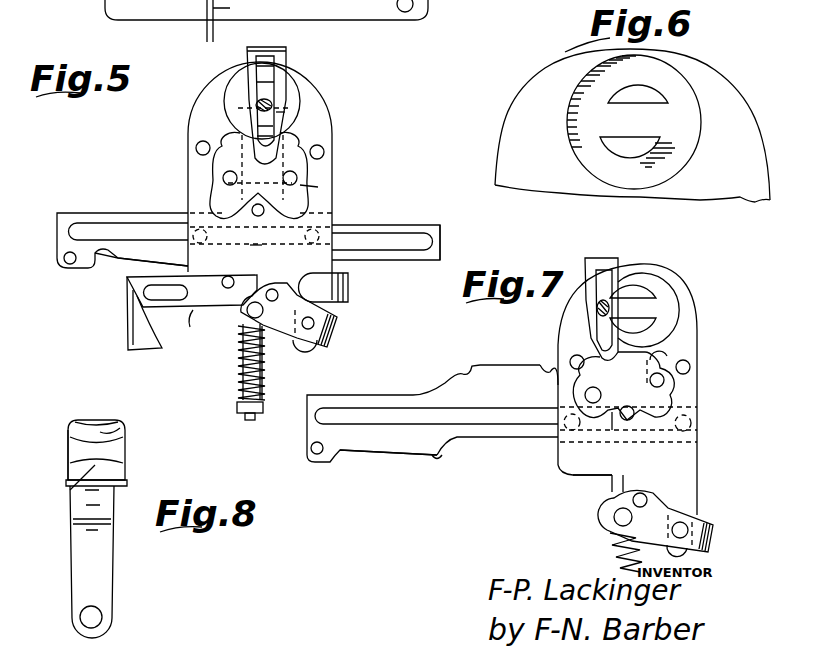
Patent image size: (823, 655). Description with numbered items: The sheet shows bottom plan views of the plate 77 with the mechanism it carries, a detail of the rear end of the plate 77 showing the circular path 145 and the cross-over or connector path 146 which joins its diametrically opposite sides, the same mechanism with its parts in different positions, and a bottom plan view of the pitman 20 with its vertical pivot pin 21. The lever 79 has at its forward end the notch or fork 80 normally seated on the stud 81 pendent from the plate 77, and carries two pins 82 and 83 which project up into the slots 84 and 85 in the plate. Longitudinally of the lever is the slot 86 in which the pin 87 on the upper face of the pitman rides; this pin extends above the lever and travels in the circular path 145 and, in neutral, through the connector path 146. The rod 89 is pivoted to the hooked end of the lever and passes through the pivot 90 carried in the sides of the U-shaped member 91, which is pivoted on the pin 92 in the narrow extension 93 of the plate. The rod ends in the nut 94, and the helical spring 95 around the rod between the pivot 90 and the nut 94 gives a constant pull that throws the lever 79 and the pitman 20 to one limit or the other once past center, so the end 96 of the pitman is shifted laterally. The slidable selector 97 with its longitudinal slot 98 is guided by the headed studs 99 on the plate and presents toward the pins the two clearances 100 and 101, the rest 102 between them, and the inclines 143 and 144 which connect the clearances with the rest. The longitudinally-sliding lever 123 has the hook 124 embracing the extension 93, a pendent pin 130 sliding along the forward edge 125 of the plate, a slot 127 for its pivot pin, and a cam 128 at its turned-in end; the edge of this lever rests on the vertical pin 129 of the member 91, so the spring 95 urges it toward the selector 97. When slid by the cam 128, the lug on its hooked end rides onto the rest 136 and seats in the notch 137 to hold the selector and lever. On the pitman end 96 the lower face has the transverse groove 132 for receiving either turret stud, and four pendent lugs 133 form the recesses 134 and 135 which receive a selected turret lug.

In FIG. 8, the pitman 20 is at (112, 498).
In FIG. 8, the vertical pivot pin 21 is at (102, 618).
In FIG. 5, the plate 77 is at (306, 76).
In FIG. 6, the plate 77 is at (632, 125).
In FIG. 7, the plate 77 is at (695, 313).
In FIG. 5, the lever 79 is at (300, 178).
In FIG. 7, the lever 79 is at (623, 386).
In FIG. 5, the notch or fork 80 is at (260, 217).
In FIG. 7, the notch or fork 80 is at (612, 430).
In FIG. 5, the stud 81 is at (255, 240).
In FIG. 7, the stud 81 is at (627, 420).
In FIG. 5, the stud or pin 82 is at (318, 187).
In FIG. 7, the stud or pin 82 is at (665, 378).
In FIG. 5, the stud or pin 83 is at (224, 182).
In FIG. 7, the stud or pin 83 is at (585, 396).
In FIG. 5, the slot 84 is at (303, 150).
In FIG. 7, the slot 84 is at (667, 352).
In FIG. 5, the slot 85 is at (200, 143).
In FIG. 5, the slot 86 is at (272, 60).
In FIG. 7, the slot 86 is at (600, 272).
In FIG. 5, the pin or pivot 87 is at (270, 105).
In FIG. 7, the pin or pivot 87 is at (598, 307).
In FIG. 5, the rod 89 is at (240, 364).
In FIG. 7, the rod 89 is at (618, 490).
In FIG. 5, the pivot 90 is at (243, 313).
In FIG. 7, the pivot 90 is at (614, 517).
In FIG. 5, the U-shaped member 91 is at (338, 333).
In FIG. 7, the U-shaped member 91 is at (714, 534).
In FIG. 5, the pin 92 is at (318, 322).
In FIG. 7, the pin 92 is at (688, 522).
In FIG. 5, the narrow extension 93 is at (317, 345).
In FIG. 7, the narrow extension 93 is at (690, 503).
In FIG. 5, the nut 94 is at (237, 407).
In FIG. 5, the helical spring 95 is at (268, 362).
In FIG. 7, the helical spring 95 is at (612, 540).
In FIG. 8, the end of the pitman 96 is at (90, 418).
In FIG. 5, the selector 97 is at (443, 240).
In FIG. 7, the selector 97 is at (512, 434).
In FIG. 5, the longitudinal slot 98 is at (386, 232).
In FIG. 7, the longitudinal slot 98 is at (474, 417).
In FIG. 5, the headed studs 99 is at (192, 244).
In FIG. 7, the headed studs 99 is at (697, 428).
In FIG. 5, the clearance 100 is at (446, 220).
In FIG. 5, the clearance 101 is at (97, 206).
In FIG. 7, the clearance 101 is at (378, 395).
In FIG. 7, the rest 102 is at (502, 365).
In FIG. 5, the longitudinally-sliding lever 123 is at (206, 326).
In FIG. 5, the hook 124 is at (350, 286).
In FIG. 5, the forward edge 125 is at (245, 276).
In FIG. 7, the forward edge 125 is at (568, 478).
In FIG. 5, the slot 127 is at (140, 302).
In FIG. 5, the cam 128 is at (152, 333).
In FIG. 5, the vertical pin 129 is at (278, 287).
In FIG. 7, the vertical pin 129 is at (647, 495).
In FIG. 5, the pendent pin 130 is at (225, 287).
In FIG. 8, the transverse recess or groove 132 is at (67, 447).
In FIG. 8, the pendent bosses or lugs 133 is at (96, 450).
In FIG. 8, the recess 134 is at (114, 426).
In FIG. 8, the recess 135 is at (70, 484).
In FIG. 5, the rest 136 is at (130, 263).
In FIG. 7, the rest 136 is at (392, 453).
In FIG. 7, the notch 137 is at (438, 459).
In FIG. 5, the inclination 143 is at (200, 213).
In FIG. 7, the inclination 143 is at (434, 386).
In FIG. 5, the incline 144 is at (325, 213).
In FIG. 7, the incline 144 is at (557, 360).
In FIG. 5, the circular path 145 is at (233, 86).
In FIG. 6, the circular path 145 is at (634, 122).
In FIG. 7, the circular path 145 is at (637, 280).
In FIG. 5, the cross-over or connector path 146 is at (283, 109).
In FIG. 6, the cross-over or connector path 146 is at (637, 140).
In FIG. 7, the cross-over or connector path 146 is at (633, 308).